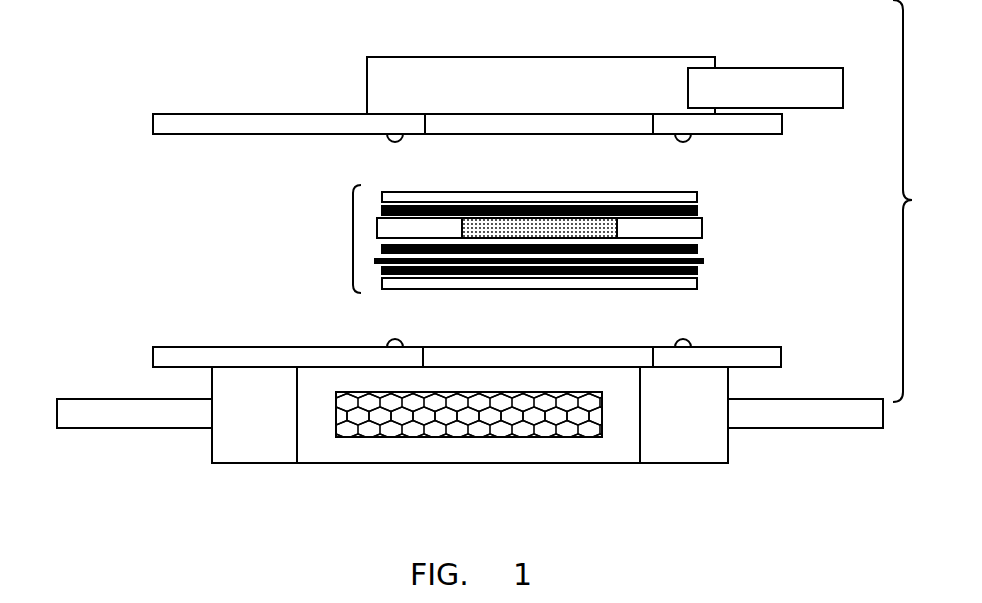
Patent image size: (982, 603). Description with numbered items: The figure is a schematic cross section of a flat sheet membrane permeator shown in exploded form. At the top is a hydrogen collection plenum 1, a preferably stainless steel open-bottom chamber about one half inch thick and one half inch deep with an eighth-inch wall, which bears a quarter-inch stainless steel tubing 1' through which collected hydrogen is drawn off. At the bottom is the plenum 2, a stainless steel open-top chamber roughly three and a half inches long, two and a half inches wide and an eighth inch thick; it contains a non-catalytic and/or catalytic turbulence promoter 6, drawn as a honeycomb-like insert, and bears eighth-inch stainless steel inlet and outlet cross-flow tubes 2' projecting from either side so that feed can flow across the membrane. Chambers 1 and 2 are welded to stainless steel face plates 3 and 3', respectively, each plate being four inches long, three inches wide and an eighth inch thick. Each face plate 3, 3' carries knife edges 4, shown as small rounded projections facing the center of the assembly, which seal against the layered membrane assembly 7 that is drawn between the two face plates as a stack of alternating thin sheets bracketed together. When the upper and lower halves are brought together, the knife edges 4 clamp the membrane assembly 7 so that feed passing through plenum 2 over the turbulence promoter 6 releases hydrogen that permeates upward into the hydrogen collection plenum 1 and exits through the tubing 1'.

The hydrogen collection plenum 1 is at (541, 66).
The stainless steel tubing 1' is at (765, 68).
The plenum 2 is at (470, 444).
The inlet and outlet cross-flow tubes 2' is at (470, 445).
The face plate 3 is at (467, 102).
The face plate 3' is at (467, 334).
The knife edges 4 is at (389, 143).
The turbulence promoter 6 is at (538, 437).
The layered electrode assembly 7 is at (351, 233).